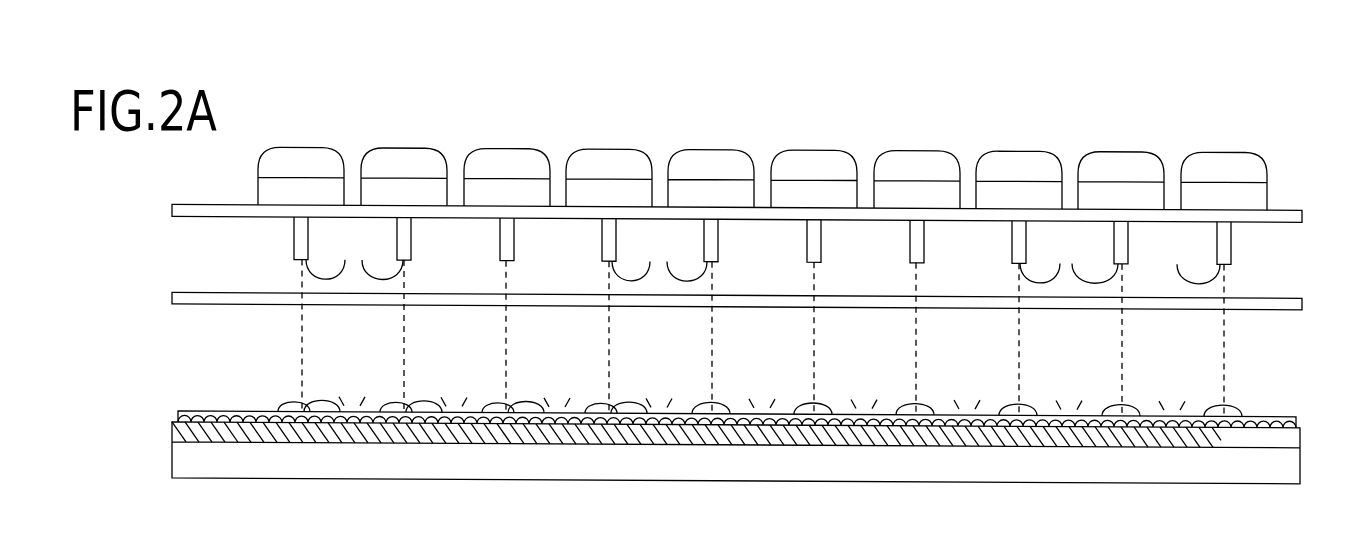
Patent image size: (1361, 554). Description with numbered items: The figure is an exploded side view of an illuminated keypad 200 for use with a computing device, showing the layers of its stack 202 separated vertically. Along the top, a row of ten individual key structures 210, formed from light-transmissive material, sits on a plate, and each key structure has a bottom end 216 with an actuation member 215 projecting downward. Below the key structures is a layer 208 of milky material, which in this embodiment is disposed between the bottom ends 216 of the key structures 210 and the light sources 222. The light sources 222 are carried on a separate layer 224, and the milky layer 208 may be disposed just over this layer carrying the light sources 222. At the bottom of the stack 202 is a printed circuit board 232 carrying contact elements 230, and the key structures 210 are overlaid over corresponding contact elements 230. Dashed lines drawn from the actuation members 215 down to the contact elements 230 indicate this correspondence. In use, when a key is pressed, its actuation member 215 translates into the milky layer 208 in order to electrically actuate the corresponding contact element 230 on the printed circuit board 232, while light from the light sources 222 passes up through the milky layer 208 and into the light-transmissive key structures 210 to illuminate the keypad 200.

The keypad 200 is at (1250, 112).
The stack 202 is at (155, 205).
The layer of milky material 208 is at (1322, 267).
The key structures 210 is at (606, 142).
The actuation members 215 is at (602, 250).
The bottom ends of the key structures 216 is at (763, 258).
The light sources 222 is at (354, 397).
The separate layer 224 is at (1297, 410).
The contact elements 230 is at (342, 399).
The printed circuit board 232 is at (172, 436).